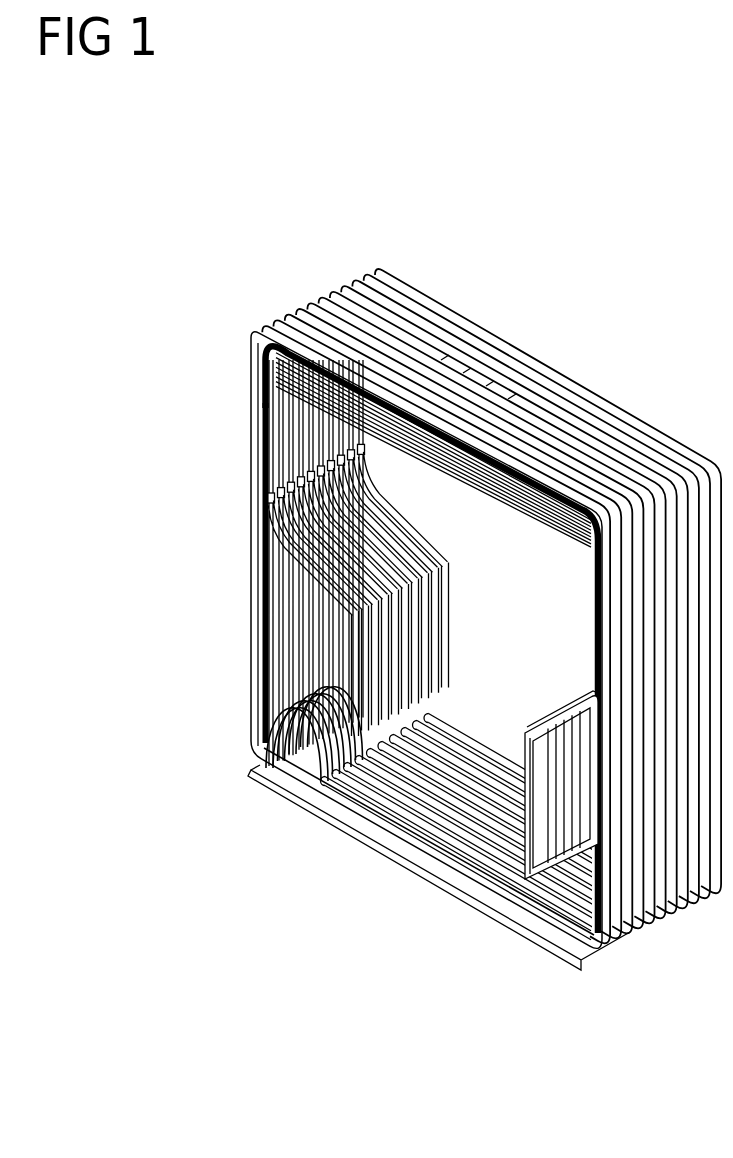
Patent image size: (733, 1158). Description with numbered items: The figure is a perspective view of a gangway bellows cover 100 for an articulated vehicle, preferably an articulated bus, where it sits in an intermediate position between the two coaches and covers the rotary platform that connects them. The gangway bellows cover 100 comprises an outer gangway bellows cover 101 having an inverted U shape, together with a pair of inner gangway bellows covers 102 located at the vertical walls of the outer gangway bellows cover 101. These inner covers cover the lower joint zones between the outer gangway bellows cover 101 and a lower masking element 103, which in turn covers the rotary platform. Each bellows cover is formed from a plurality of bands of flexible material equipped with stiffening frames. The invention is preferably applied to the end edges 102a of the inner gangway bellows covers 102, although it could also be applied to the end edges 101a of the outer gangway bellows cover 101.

The gangway bellows cover 100 is at (304, 246).
The outer gangway bellows cover 101 is at (290, 303).
The end edges of the outer gangway bellows cover 101a is at (600, 383).
The inner gangway bellows covers 102 is at (340, 558).
The end edges of the inner gangway bellows covers 102a is at (437, 615).
The lower masking element 103 is at (392, 800).